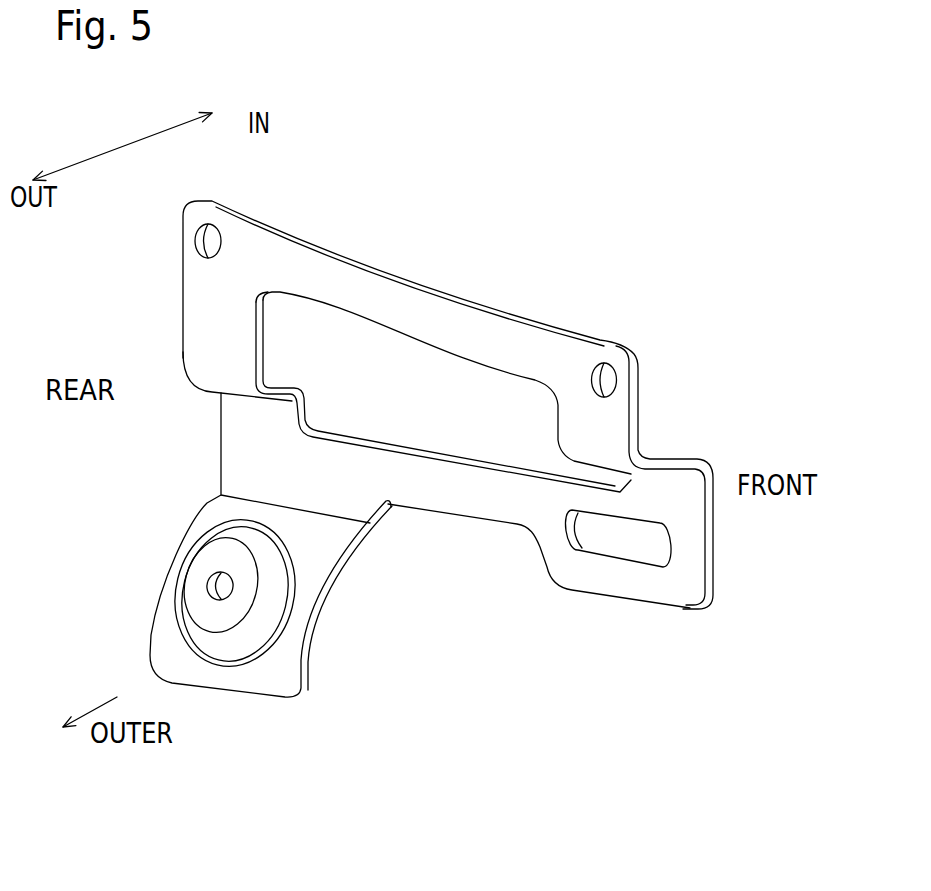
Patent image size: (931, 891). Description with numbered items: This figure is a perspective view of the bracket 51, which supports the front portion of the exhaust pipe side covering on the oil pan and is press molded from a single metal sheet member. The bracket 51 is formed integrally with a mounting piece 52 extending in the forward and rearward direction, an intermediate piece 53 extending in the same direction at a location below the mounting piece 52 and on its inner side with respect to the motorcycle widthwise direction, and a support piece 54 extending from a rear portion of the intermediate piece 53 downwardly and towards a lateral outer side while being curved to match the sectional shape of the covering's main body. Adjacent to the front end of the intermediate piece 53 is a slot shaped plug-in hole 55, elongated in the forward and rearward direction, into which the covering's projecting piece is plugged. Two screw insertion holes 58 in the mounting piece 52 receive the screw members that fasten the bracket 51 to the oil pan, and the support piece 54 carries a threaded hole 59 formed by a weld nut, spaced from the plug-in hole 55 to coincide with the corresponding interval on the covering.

The bracket 51 is at (477, 300).
The mounting piece 52 is at (400, 295).
The intermediate piece 53 is at (233, 450).
The support piece 54 is at (290, 621).
The plug-in hole 55 is at (665, 552).
The screw insertion holes 58 is at (208, 239).
The threaded hole 59 is at (207, 584).